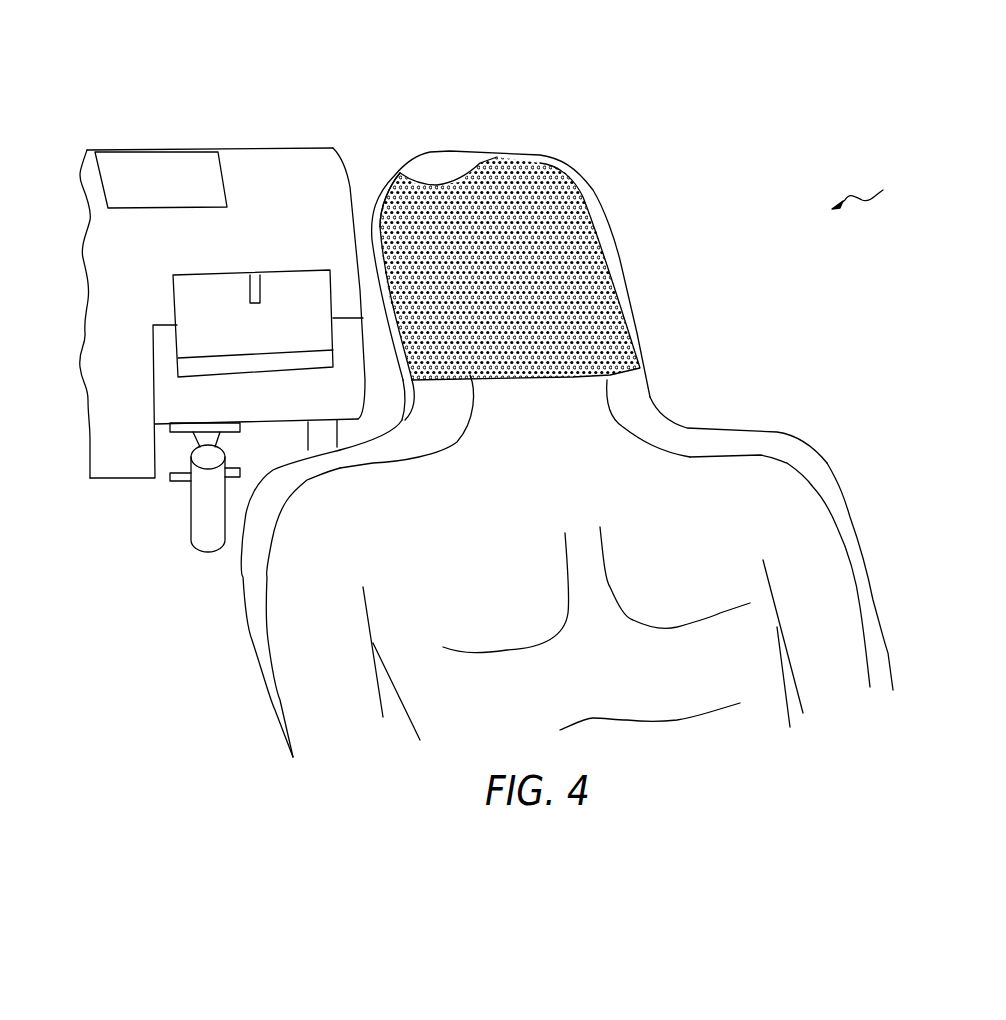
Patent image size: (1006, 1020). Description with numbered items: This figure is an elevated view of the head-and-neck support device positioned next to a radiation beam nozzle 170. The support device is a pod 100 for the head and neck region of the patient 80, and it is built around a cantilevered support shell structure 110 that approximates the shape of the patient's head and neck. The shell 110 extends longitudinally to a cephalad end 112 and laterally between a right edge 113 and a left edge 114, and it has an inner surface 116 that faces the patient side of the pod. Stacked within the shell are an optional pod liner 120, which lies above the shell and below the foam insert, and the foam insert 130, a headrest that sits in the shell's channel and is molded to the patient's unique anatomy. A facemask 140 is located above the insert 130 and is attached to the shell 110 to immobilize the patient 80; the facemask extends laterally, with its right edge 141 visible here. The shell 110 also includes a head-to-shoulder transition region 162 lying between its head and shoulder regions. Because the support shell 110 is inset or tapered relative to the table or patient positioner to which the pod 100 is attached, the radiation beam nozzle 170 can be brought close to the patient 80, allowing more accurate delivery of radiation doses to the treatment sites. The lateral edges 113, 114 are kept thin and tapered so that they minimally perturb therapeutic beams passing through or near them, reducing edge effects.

The patient 80 is at (827, 590).
The pod 100 is at (880, 190).
The cantilevered support shell structure 110 is at (587, 563).
The cephalad end 112 is at (495, 157).
The right edge 113 is at (667, 415).
The left edge 114 is at (395, 175).
The inner surface 116 is at (171, 488).
The pod liner 120 is at (263, 530).
The foam insert 130 is at (647, 400).
The facemask 140 is at (567, 240).
The right edge 141 is at (400, 353).
The head-to-shoulder transition region 162 is at (777, 432).
The radiation beam nozzle 170 is at (250, 183).